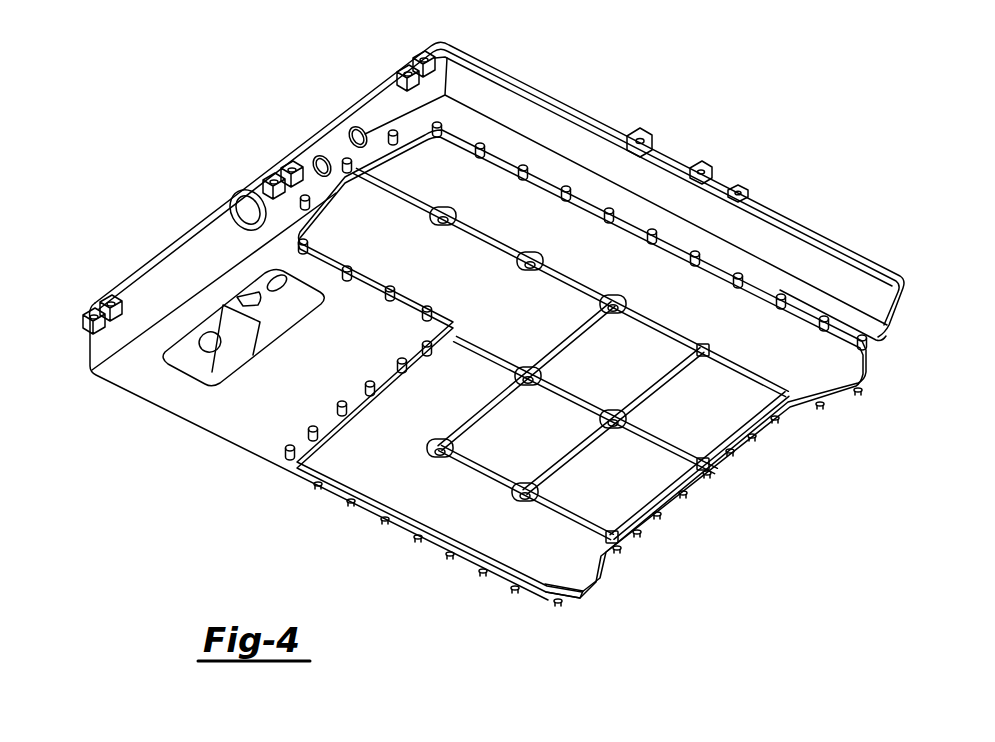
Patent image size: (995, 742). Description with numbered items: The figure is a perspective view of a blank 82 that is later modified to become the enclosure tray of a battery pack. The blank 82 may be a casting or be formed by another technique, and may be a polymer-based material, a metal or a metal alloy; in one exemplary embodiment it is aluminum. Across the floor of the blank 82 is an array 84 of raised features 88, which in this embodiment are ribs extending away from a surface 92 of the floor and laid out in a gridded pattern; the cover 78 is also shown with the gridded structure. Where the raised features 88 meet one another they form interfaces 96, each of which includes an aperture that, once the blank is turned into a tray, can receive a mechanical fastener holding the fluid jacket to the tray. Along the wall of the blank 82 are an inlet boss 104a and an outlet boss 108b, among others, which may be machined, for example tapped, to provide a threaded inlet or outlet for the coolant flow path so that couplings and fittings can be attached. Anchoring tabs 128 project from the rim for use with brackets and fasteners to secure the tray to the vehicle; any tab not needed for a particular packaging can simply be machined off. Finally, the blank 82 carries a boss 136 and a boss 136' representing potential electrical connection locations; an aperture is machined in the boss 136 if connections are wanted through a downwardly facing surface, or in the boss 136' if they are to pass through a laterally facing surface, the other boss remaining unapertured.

The blank 82 is at (582, 55).
The cover 78 is at (410, 502).
The array 84 is at (502, 569).
The raised features 88 is at (762, 392).
The surface 92 is at (348, 458).
The interfaces 96 is at (512, 380).
The inlet boss 104a is at (318, 156).
The outlet boss 108b is at (360, 125).
The anchoring tabs 128 is at (414, 62).
The boss 136 is at (243, 343).
The boss 136' is at (199, 200).